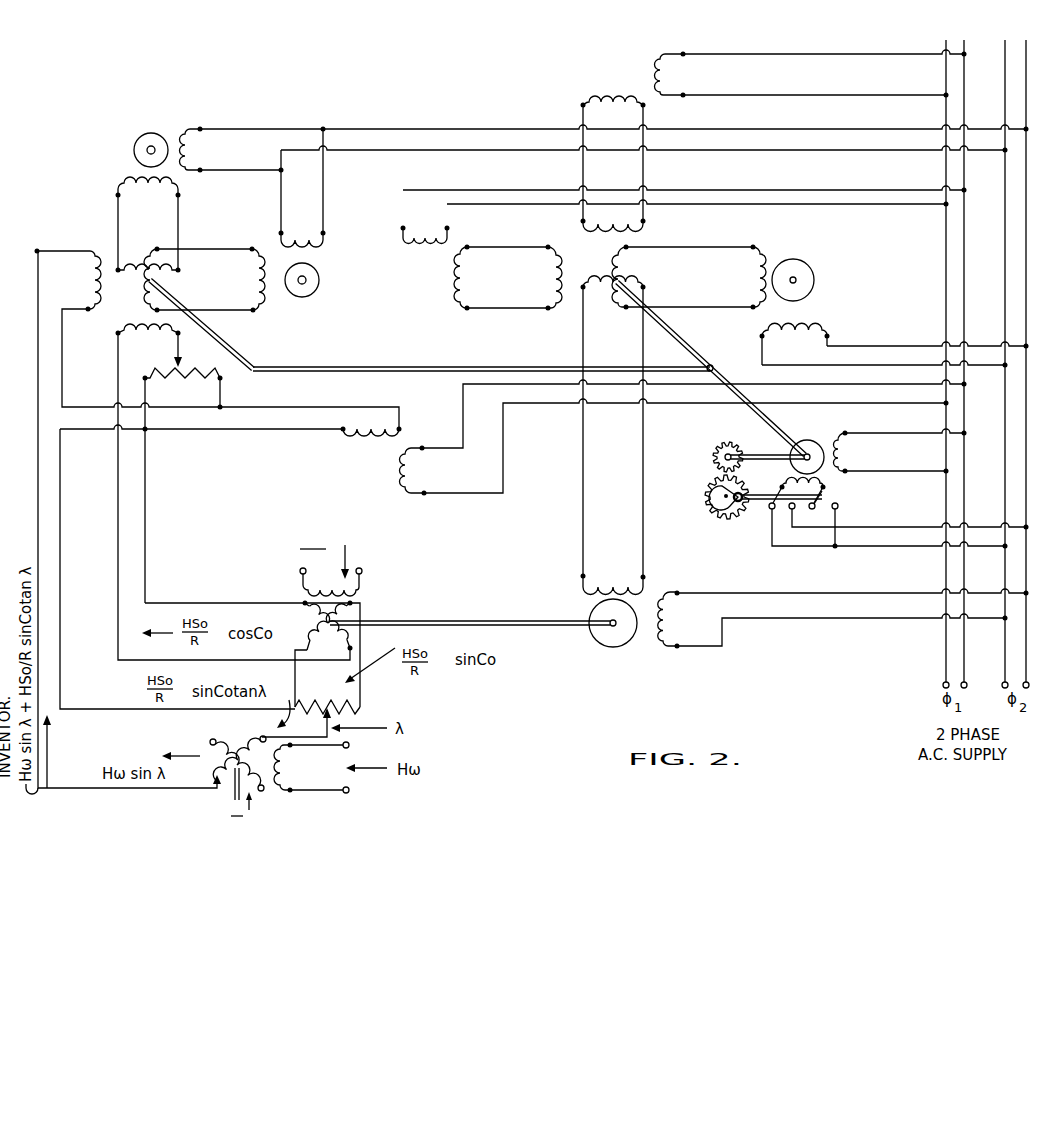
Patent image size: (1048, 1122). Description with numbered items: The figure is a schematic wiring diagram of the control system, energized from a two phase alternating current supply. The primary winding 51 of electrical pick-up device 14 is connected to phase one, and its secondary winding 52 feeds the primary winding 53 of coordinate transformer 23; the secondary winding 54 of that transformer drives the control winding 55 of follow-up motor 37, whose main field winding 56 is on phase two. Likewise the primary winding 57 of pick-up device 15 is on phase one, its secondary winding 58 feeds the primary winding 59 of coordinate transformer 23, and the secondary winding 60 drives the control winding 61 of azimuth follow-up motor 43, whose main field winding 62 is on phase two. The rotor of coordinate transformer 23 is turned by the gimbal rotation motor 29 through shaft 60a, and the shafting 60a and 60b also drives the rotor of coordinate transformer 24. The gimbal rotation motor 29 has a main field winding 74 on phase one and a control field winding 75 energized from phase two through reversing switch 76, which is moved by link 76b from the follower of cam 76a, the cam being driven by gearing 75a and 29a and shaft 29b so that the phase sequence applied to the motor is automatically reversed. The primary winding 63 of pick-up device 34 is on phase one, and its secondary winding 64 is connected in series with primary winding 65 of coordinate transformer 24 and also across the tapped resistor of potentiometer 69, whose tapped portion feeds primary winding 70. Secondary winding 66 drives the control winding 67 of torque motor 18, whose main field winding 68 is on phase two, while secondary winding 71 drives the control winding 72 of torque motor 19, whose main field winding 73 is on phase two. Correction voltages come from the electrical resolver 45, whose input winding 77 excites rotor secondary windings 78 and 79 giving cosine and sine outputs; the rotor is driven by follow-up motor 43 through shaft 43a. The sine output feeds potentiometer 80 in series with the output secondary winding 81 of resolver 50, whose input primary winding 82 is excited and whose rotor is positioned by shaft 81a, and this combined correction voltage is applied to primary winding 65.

The electrical pick-up device 14 is at (442, 284).
The electrical pick-up device 15 is at (624, 85).
The torque motor 18 is at (325, 290).
The torque motor 19 is at (126, 130).
The coordinate transformer 23 is at (564, 316).
The coordinate transformer 24 is at (97, 241).
The gimbal rotation motor 29 is at (789, 449).
The gearing 29a is at (714, 459).
The shaft 29b is at (771, 470).
The electrical pick-up device 34 is at (392, 483).
The follow-up motor 37 is at (822, 289).
The azimuth follow-up motor 43 is at (594, 653).
The shaft 43a is at (512, 621).
The electrical resolver 45 is at (370, 593).
The resolver 50 is at (274, 799).
The primary winding 51 is at (408, 240).
The secondary winding 52 is at (462, 288).
The primary winding 53 is at (553, 288).
The secondary winding 54 is at (627, 262).
The control winding 55 is at (752, 286).
The main field winding 56 is at (802, 340).
The primary winding 57 is at (675, 77).
The secondary winding 58 is at (621, 109).
The primary winding 59 is at (637, 221).
The secondary winding 60 is at (607, 297).
The shaft 60a is at (225, 337).
The shafting 60b is at (376, 368).
The control winding 61 is at (620, 583).
The main field winding 62 is at (670, 628).
The primary winding 63 is at (407, 470).
The secondary winding 64 is at (352, 436).
The primary winding 65 is at (86, 281).
The secondary winding 66 is at (165, 264).
The control winding 67 is at (255, 283).
The main field winding 68 is at (284, 239).
The potentiometer 69 is at (201, 378).
The primary winding 70 is at (166, 338).
The secondary winding 71 is at (138, 283).
The control winding 72 is at (168, 198).
The main field winding 73 is at (190, 153).
The main field winding 74 is at (846, 454).
The control field winding 75 is at (831, 484).
The gearing 75a is at (706, 497).
The reversing switch 76 is at (838, 503).
The cam 76a is at (708, 507).
The link 76b is at (760, 504).
The input winding 77 is at (348, 584).
The secondary winding 78 is at (306, 611).
The secondary winding 79 is at (356, 618).
The potentiometer 80 is at (343, 686).
The output secondary winding 81 is at (260, 737).
The shaft 81a is at (232, 795).
The input primary winding 82 is at (290, 777).